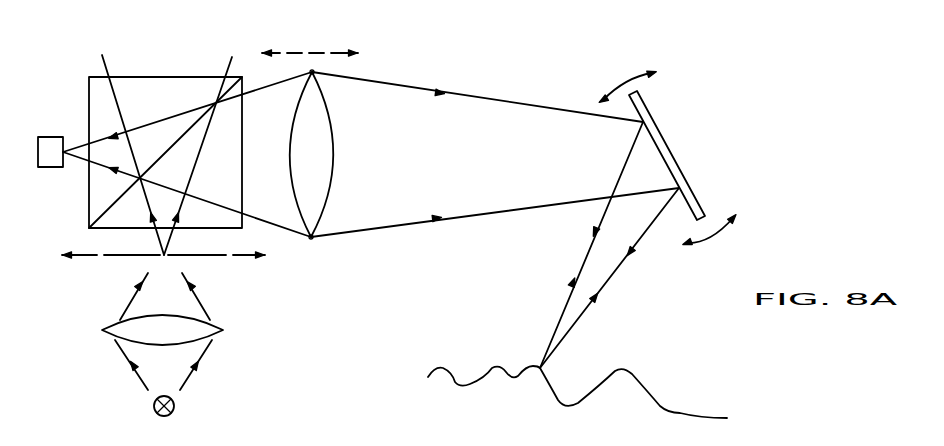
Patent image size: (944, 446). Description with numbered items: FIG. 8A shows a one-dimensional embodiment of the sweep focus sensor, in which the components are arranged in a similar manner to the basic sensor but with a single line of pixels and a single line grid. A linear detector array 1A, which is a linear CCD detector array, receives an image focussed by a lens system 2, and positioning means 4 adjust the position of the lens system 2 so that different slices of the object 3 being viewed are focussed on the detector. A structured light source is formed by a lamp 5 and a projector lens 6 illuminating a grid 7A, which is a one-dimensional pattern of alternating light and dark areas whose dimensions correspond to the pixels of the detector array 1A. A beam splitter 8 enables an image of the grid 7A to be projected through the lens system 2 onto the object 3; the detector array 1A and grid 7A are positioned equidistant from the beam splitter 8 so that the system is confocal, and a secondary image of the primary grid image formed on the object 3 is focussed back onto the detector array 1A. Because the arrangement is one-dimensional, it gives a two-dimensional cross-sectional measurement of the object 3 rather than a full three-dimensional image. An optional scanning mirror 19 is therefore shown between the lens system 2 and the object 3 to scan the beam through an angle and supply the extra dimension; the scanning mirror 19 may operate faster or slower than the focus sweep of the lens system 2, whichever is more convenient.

The linear detector array 1A is at (53, 147).
The lens system 2 is at (314, 213).
The object 3 is at (516, 411).
The positioning means 4 is at (322, 52).
The lamp 5 is at (153, 410).
The projector lens 6 is at (213, 333).
The grid 7A is at (108, 257).
The beam splitter 8 is at (98, 220).
The scanning mirror 19 is at (663, 138).